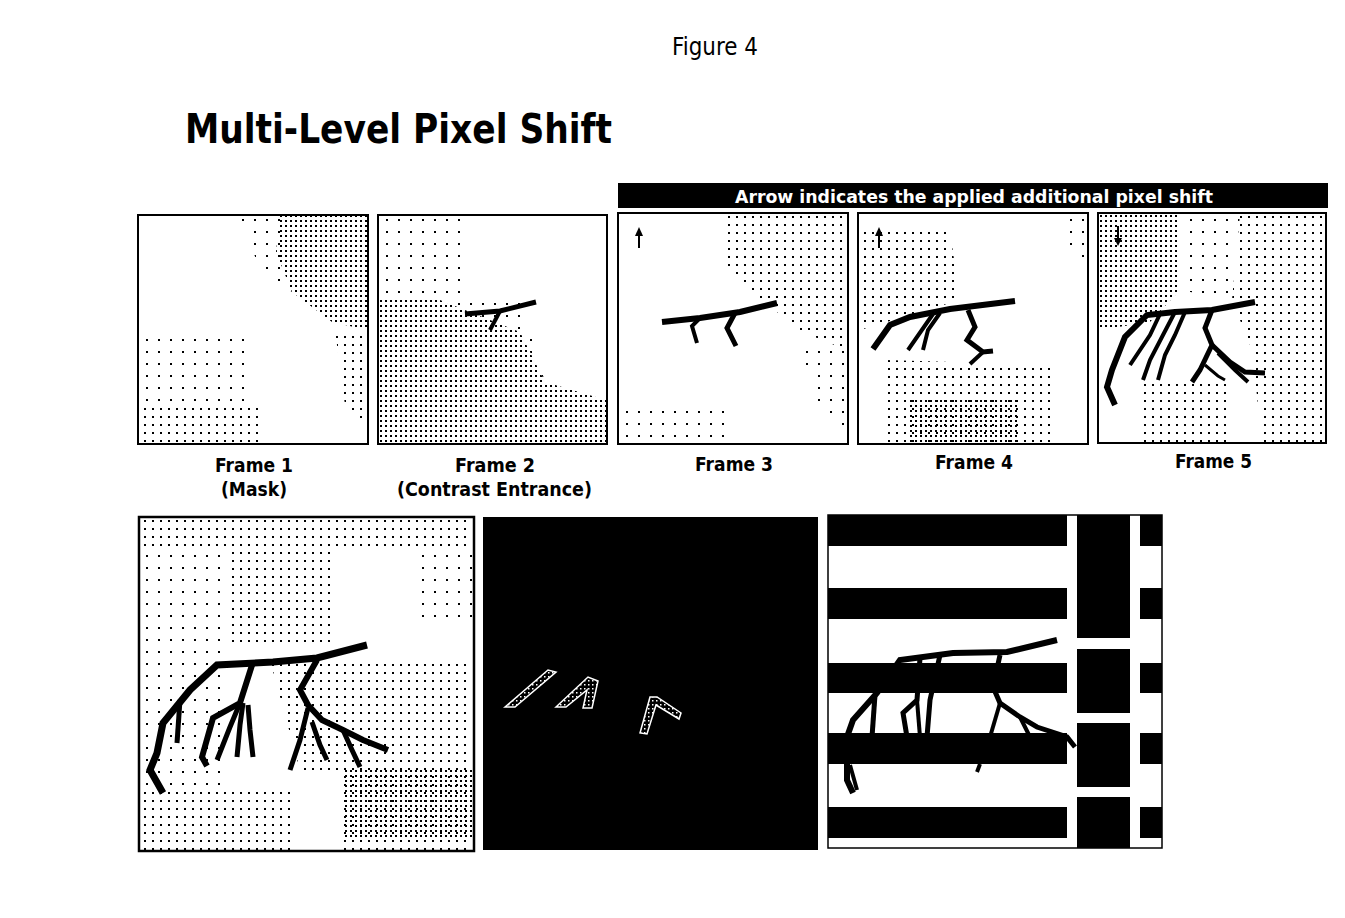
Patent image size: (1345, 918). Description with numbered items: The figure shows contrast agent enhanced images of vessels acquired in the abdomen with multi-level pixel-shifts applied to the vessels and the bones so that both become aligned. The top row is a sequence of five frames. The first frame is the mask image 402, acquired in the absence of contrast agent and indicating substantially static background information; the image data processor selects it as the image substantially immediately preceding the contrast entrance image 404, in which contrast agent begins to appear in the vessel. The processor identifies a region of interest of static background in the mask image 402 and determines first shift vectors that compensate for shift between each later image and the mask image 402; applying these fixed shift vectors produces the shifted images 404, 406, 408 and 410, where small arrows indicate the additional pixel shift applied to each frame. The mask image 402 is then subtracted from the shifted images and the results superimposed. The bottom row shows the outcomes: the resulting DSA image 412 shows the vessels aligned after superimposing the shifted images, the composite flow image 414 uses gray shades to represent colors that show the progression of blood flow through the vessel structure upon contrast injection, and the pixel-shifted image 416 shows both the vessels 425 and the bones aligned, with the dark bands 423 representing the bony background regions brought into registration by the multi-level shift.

The mask image 402 is at (236, 214).
The contrast entrance image 404 is at (487, 214).
The shifted image 406 is at (718, 213).
The shifted image 408 is at (957, 213).
The shifted image 410 is at (1170, 213).
The resulting image 412 is at (320, 517).
The composite flow image 414 is at (605, 517).
The image 416 is at (1025, 654).
The pixel shift artifact region 423 is at (1122, 578).
The vessels 425 is at (900, 660).